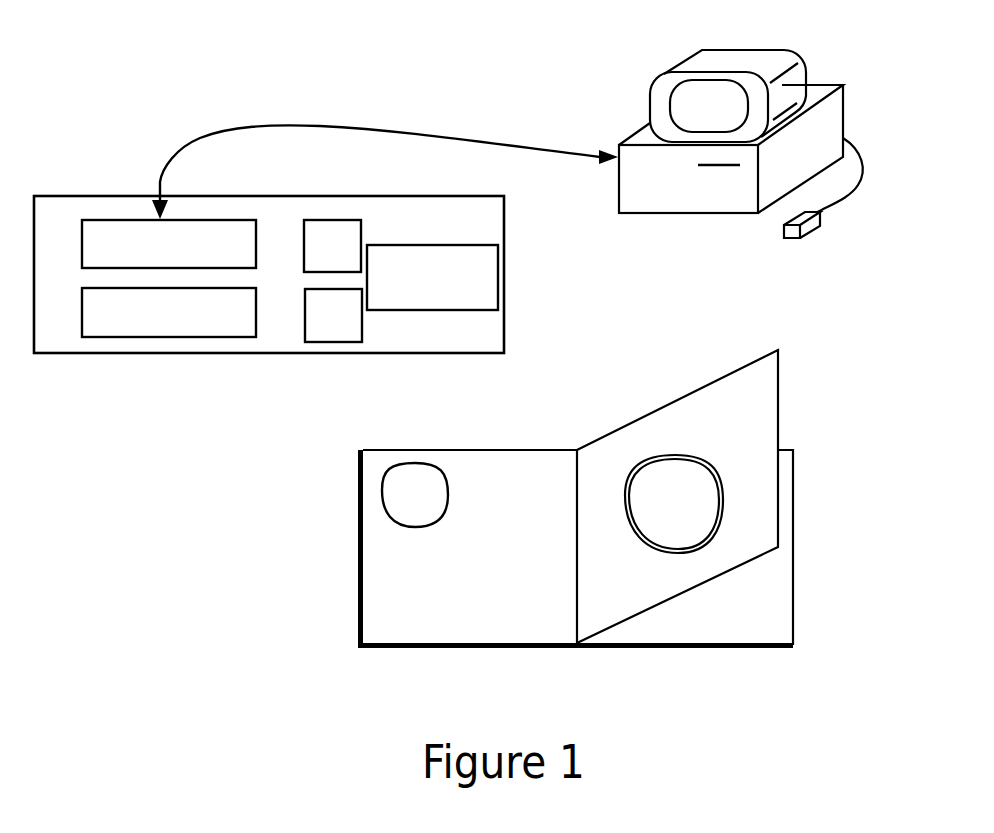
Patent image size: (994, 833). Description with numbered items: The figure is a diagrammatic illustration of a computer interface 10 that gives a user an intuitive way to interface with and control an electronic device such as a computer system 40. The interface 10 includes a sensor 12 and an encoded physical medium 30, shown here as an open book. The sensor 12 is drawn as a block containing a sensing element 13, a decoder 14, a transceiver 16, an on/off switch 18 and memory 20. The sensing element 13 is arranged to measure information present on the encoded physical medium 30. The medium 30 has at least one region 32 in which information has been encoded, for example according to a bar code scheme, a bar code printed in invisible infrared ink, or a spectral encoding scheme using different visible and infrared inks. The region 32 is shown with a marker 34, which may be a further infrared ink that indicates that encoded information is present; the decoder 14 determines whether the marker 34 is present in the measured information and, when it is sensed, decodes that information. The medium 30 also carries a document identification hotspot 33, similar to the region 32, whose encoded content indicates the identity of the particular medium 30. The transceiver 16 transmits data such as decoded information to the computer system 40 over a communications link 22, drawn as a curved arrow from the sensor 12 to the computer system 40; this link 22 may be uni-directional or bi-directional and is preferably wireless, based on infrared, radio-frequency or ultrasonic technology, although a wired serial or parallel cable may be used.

The computer interface 10 is at (268, 47).
The sensor 12 is at (321, 196).
The sensing element 13 is at (434, 244).
The decoder 14 is at (85, 289).
The transceiver 16 is at (85, 220).
The on/off switch 18 is at (344, 329).
The memory 20 is at (344, 259).
The communications link 22 is at (243, 130).
The encoded physical medium 30 is at (357, 492).
The region 32 is at (686, 521).
The document identification hotspot 33 is at (426, 511).
The marker 34 is at (633, 471).
The computer system 40 is at (826, 85).